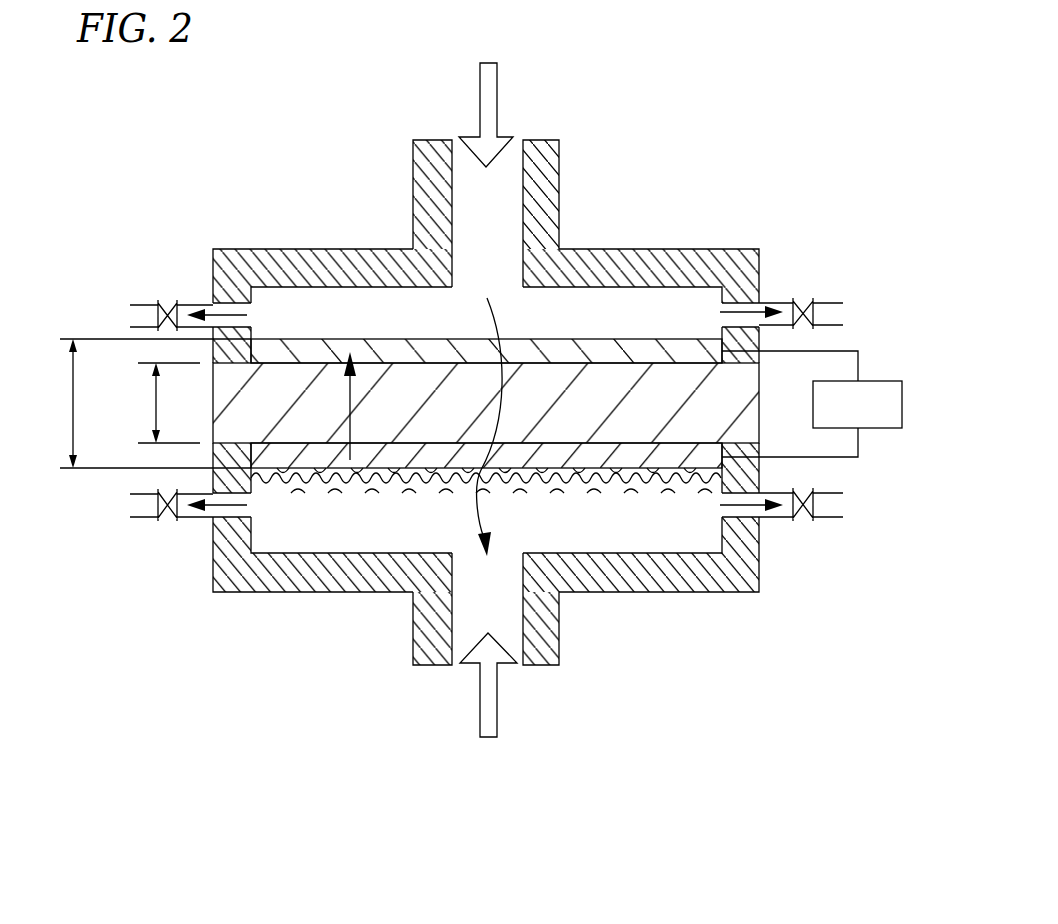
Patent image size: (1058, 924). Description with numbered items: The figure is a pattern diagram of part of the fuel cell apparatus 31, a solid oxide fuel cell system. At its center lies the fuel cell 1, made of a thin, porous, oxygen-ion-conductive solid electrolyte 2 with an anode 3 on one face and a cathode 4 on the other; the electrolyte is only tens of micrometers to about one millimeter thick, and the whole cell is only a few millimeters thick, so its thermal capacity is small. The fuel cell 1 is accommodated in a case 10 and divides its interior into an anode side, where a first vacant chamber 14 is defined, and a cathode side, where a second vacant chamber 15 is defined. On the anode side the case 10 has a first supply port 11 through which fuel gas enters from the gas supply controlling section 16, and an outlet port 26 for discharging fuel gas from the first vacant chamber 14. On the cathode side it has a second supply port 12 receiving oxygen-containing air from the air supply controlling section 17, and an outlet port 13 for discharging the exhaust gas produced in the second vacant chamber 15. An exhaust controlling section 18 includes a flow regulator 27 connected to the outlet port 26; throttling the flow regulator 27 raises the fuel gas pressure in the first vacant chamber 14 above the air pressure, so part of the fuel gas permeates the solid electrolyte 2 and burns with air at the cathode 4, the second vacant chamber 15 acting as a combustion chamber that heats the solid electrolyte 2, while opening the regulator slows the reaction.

The fuel cell 1 is at (297, 337).
The solid electrolyte 2 is at (597, 383).
The anode 3 is at (333, 345).
The cathode 4 is at (323, 462).
The case 10 is at (710, 250).
The first supply port 11 is at (532, 215).
The second supply port 12 is at (438, 662).
The outlet port 13 is at (232, 505).
The first vacant chamber 14 is at (393, 303).
The second vacant chamber 15 is at (384, 535).
The gas supply controlling section 16 is at (502, 43).
The air supply controlling section 17 is at (508, 784).
The exhaust controlling section 18 is at (124, 329).
The outlet port 26 is at (233, 308).
The flow regulator 27 is at (164, 302).
The fuel cell apparatus 31 is at (684, 165).